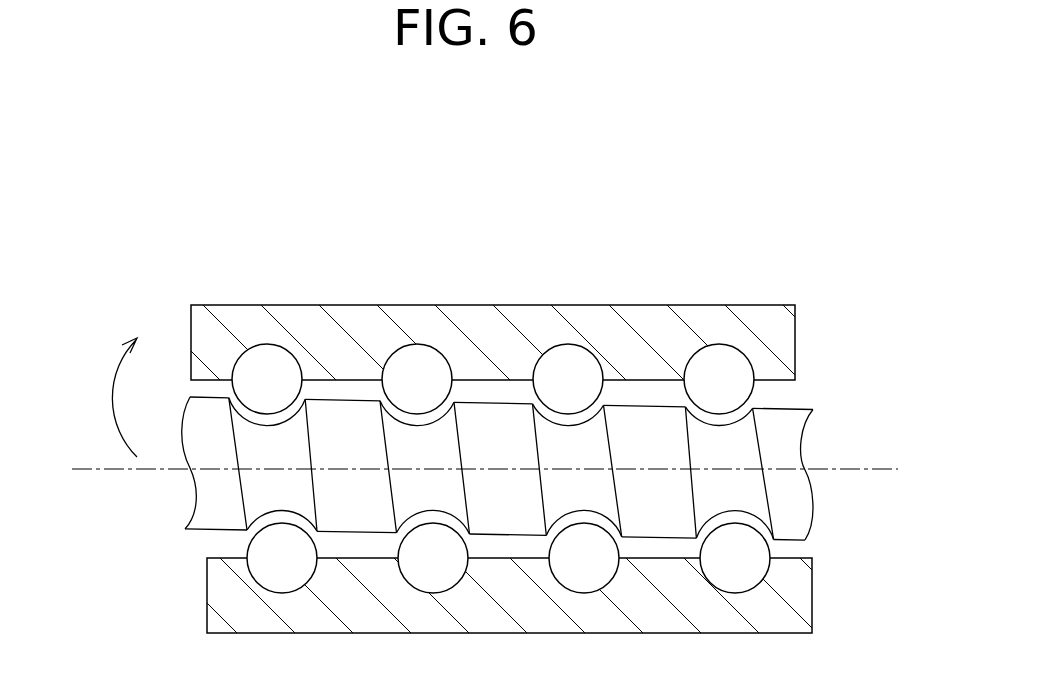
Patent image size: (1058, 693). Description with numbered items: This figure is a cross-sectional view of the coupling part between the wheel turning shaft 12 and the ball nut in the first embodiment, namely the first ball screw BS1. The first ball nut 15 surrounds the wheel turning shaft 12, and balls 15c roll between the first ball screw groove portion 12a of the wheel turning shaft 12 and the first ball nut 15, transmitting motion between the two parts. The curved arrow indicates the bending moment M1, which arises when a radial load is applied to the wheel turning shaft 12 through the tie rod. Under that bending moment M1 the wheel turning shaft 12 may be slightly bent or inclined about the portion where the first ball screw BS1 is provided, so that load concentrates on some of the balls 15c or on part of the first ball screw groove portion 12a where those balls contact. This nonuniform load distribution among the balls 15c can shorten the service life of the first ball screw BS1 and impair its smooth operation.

The first ball screw BS1 is at (770, 265).
The first ball nut 15 is at (589, 313).
The balls 15c is at (403, 368).
The wheel turning shaft 12 is at (522, 458).
The first ball screw groove portion 12a is at (271, 403).
The bending moment M1 is at (112, 397).